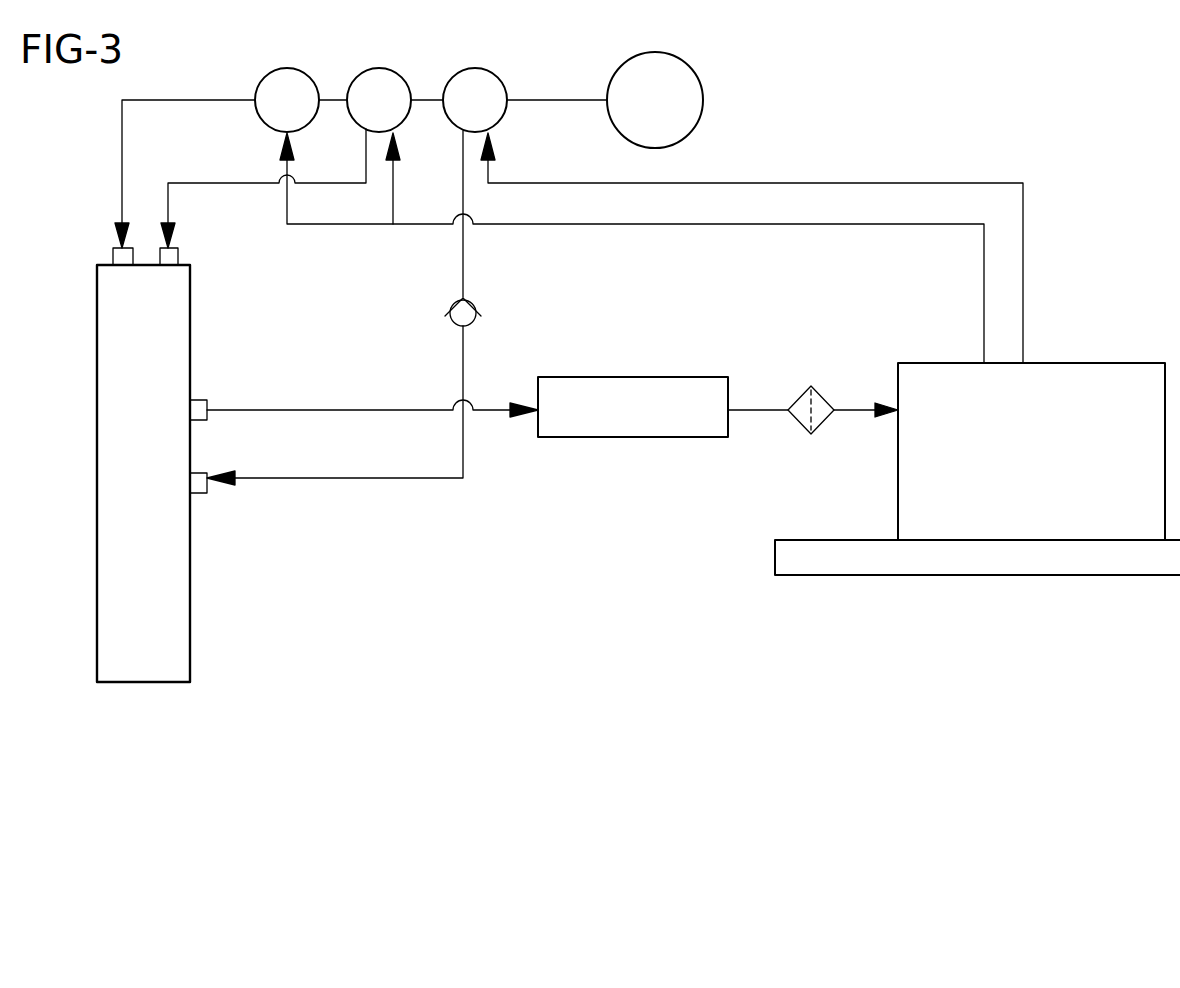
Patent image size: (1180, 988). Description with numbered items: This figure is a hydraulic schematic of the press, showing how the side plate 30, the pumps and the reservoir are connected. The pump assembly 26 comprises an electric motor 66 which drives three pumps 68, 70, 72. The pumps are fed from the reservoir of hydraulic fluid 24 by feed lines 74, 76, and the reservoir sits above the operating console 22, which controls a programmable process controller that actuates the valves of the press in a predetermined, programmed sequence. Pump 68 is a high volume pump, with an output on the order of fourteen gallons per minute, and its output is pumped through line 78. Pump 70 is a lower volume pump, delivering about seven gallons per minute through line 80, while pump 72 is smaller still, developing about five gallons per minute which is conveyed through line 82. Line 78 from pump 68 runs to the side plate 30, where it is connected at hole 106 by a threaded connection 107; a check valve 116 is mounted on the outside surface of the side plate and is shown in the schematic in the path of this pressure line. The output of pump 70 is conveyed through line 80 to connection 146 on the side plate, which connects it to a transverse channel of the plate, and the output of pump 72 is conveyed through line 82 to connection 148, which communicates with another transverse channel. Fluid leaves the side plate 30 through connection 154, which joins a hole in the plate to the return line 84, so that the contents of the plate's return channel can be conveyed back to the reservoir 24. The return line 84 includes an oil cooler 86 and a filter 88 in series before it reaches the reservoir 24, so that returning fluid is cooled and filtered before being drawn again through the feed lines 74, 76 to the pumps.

The operating console 22 is at (822, 544).
The reservoir of hydraulic fluid 24 is at (1072, 363).
The pump assembly 26 is at (730, 86).
The side plate 30 is at (178, 578).
The electric motor 66 is at (665, 62).
The pump 68 is at (490, 82).
The pump 70 is at (393, 82).
The pump 72 is at (305, 82).
The feed line 74 is at (1023, 213).
The feed line 76 is at (984, 268).
The line 78 is at (463, 280).
The line 80 is at (323, 183).
The line 82 is at (163, 102).
The return line 84 is at (330, 410).
The oil cooler 86 is at (612, 377).
The filter 88 is at (795, 396).
The hole 106 is at (197, 473).
The threaded connection 107 is at (197, 493).
The check valve 116 is at (475, 322).
The connection 146 is at (178, 258).
The connection 148 is at (113, 256).
The connection 154 is at (207, 400).